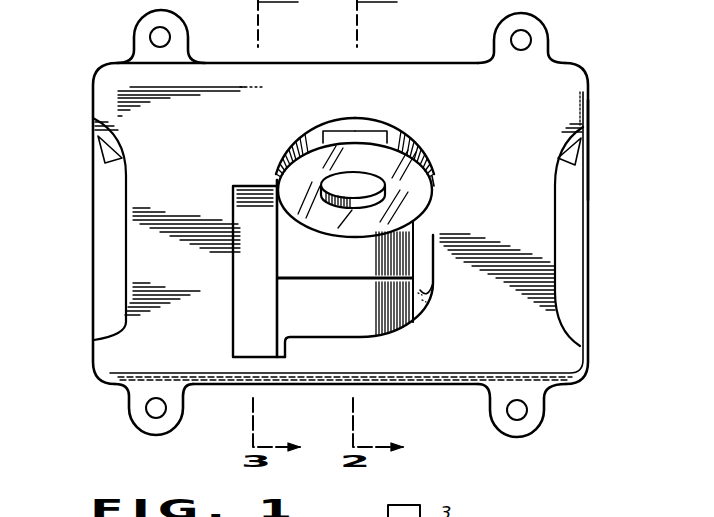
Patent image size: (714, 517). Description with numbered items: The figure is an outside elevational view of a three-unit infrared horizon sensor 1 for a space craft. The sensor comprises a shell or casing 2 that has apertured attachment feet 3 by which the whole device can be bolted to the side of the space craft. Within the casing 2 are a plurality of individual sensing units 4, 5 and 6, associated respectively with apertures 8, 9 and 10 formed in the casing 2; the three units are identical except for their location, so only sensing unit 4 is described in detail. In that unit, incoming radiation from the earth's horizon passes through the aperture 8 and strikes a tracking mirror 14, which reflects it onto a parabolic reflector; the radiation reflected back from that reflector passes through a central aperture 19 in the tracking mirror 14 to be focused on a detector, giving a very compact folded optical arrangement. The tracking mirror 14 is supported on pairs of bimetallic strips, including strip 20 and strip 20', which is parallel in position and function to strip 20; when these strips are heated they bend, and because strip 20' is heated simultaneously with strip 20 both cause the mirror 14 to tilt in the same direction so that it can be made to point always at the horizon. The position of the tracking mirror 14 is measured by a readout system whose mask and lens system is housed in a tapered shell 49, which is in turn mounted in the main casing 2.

The infrared horizon sensor 1 is at (612, 66).
The casing 2 is at (584, 107).
The attachment feet 3 is at (136, 33).
The sensing unit 4 is at (448, 157).
The sensing unit 5 is at (590, 170).
The sensing unit 6 is at (90, 182).
The aperture 8 is at (428, 292).
The aperture 9 is at (553, 199).
The aperture 10 is at (130, 196).
The tracking mirror 14 is at (426, 203).
The central aperture 19 is at (353, 180).
The bimetallic strip 20 is at (315, 140).
The bimetallic strip 20' is at (403, 140).
The tapered shell 49 is at (247, 331).